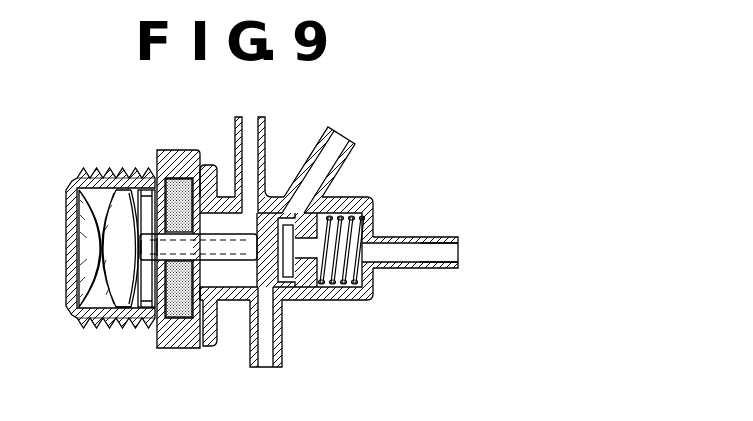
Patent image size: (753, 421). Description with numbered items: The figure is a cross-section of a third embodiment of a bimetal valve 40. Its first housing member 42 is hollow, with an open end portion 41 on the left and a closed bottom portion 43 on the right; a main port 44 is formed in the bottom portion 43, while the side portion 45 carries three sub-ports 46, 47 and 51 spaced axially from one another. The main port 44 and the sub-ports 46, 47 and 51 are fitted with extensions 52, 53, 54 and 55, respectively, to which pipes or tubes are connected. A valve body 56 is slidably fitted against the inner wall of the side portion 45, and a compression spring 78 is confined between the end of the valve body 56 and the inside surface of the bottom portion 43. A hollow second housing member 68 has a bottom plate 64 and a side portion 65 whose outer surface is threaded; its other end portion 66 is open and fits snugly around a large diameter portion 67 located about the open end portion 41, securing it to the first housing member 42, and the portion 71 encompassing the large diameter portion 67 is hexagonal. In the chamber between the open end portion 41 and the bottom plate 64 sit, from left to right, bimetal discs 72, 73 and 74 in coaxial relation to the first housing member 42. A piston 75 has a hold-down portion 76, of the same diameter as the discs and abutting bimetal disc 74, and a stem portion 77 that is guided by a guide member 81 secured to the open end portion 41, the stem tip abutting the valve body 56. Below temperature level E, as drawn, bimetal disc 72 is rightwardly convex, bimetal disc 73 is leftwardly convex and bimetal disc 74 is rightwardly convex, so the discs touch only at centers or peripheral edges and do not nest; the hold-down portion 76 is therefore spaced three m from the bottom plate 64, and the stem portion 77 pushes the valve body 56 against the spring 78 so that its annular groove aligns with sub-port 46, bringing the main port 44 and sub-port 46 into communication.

The bimetal valve 40 is at (455, 141).
The open end portion 41 is at (182, 188).
The first housing member 42 is at (373, 200).
The bottom portion 43 is at (374, 290).
The main port 44 is at (376, 239).
The side portion 45 is at (277, 195).
The sub-port 46 is at (303, 200).
The sub-port 47 is at (285, 300).
The sub-port 51 is at (223, 197).
The extension 52 is at (440, 269).
The extension 53 is at (351, 144).
The extension 54 is at (283, 357).
The extension 55 is at (266, 126).
The valve body 56 is at (241, 302).
The bottom plate 64 is at (70, 276).
The side portion 65 is at (82, 322).
The other end portion 66 is at (213, 313).
The large diameter portion 67 is at (198, 182).
The second housing member 68 is at (64, 175).
The hexagonal portion 71 is at (170, 340).
The bimetal disc 72 is at (82, 212).
The bimetal disc 73 is at (100, 188).
The bimetal disc 74 is at (137, 188).
The piston 75 is at (143, 290).
The hold-down portion 76 is at (130, 304).
The stem portion 77 is at (163, 262).
The compression spring 78 is at (347, 284).
The guide member 81 is at (180, 320).